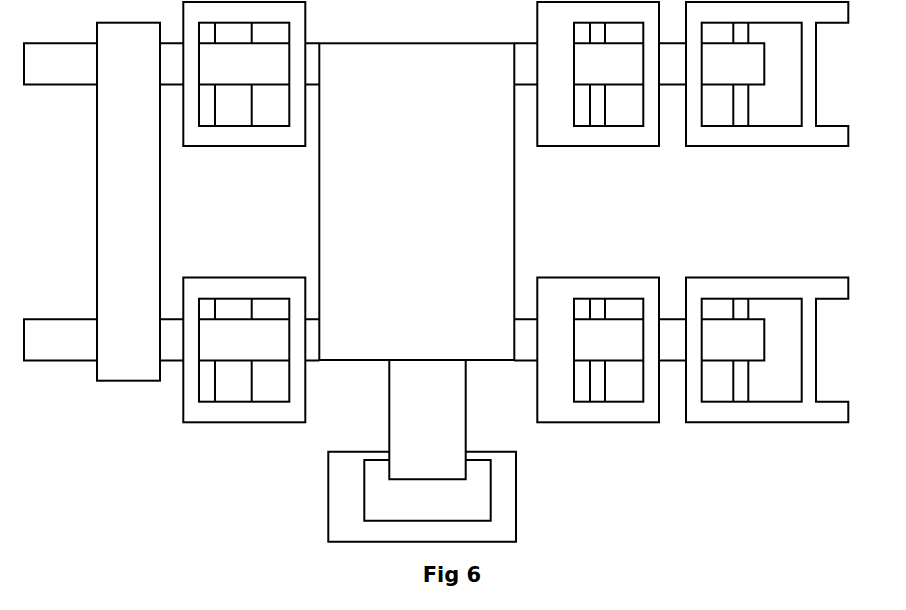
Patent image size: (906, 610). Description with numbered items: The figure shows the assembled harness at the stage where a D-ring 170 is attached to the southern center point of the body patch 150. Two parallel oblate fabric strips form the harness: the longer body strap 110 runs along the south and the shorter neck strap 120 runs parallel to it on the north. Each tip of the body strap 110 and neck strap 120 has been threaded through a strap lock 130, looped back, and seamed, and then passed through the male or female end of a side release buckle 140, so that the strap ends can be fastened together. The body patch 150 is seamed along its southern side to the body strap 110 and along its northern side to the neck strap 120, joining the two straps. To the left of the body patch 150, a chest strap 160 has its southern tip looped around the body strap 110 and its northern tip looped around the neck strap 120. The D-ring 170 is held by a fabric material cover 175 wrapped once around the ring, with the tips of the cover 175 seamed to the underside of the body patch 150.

The body strap 110 is at (29, 363).
The neck strap 120 is at (29, 87).
The strap lock 130 is at (257, 149).
The side release buckle 140 is at (769, 149).
The body patch 150 is at (521, 224).
The chest strap 160 is at (116, 384).
The D-ring 170 is at (518, 490).
The fabric material cover 175 is at (383, 412).